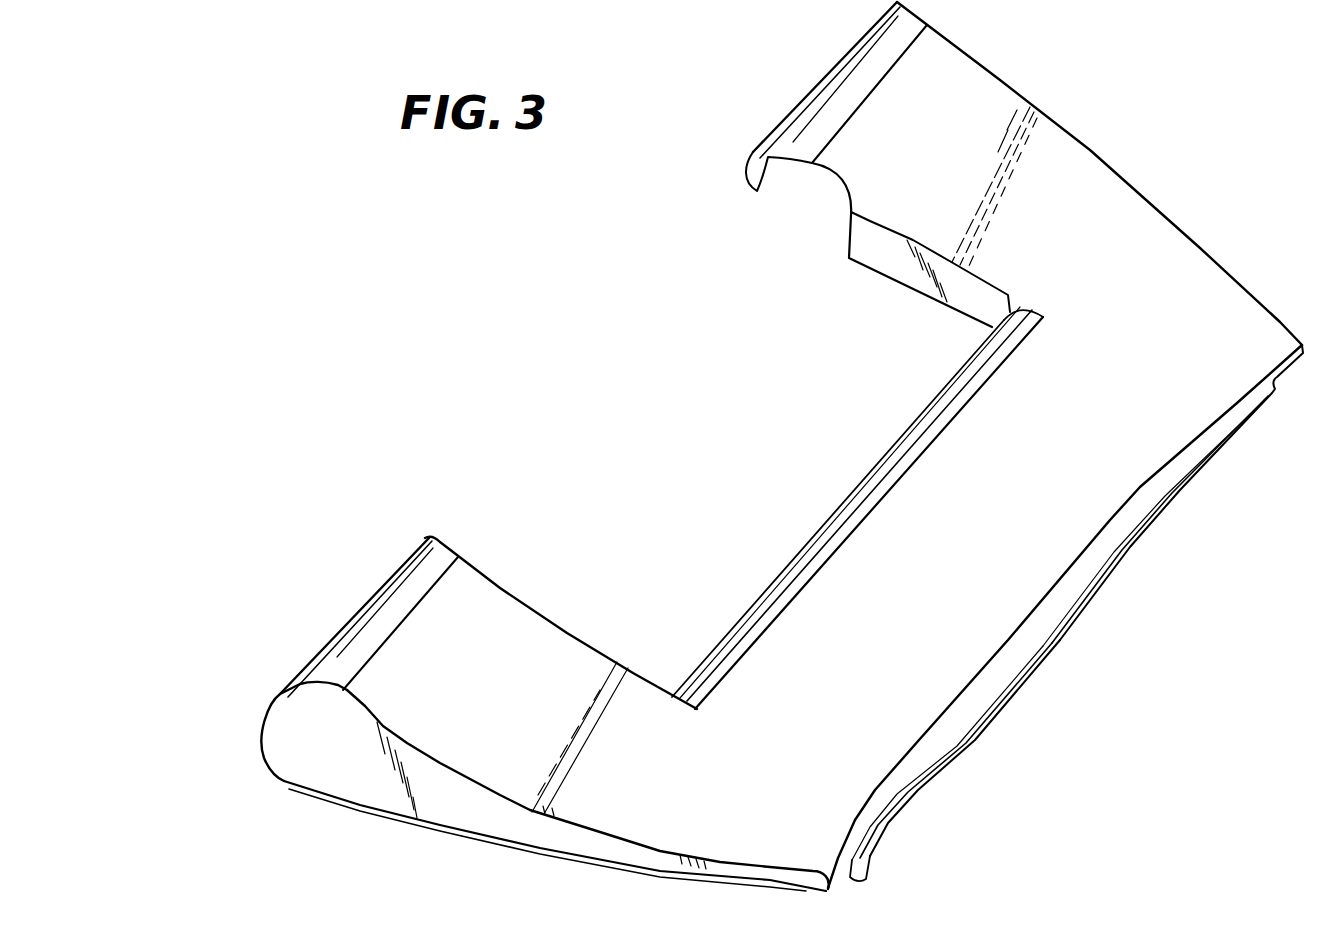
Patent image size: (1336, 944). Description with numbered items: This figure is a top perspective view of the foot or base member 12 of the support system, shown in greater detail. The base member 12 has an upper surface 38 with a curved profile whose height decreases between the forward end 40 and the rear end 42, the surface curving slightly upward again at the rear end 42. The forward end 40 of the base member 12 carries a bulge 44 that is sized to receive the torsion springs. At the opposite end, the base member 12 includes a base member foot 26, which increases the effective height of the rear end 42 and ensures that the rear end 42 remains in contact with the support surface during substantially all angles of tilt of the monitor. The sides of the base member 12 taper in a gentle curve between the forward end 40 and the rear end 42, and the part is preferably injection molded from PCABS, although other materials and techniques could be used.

The base member 12 is at (1072, 172).
The base member foot 26 is at (1253, 418).
The upper surface 38 is at (973, 533).
The forward end 40 is at (329, 652).
The rear end 42 is at (868, 819).
The bulge 44 is at (280, 712).